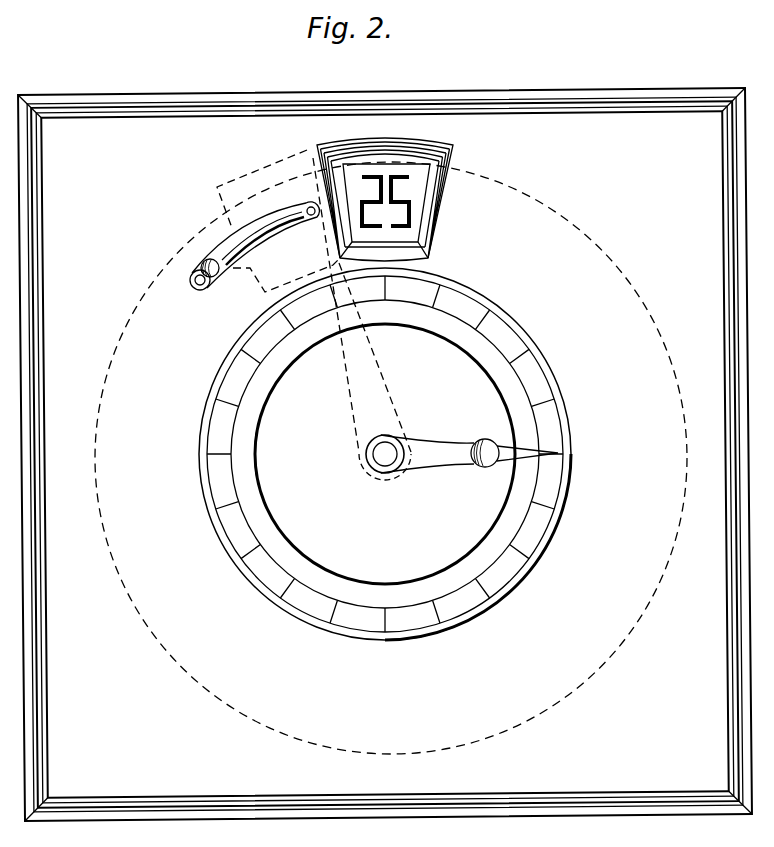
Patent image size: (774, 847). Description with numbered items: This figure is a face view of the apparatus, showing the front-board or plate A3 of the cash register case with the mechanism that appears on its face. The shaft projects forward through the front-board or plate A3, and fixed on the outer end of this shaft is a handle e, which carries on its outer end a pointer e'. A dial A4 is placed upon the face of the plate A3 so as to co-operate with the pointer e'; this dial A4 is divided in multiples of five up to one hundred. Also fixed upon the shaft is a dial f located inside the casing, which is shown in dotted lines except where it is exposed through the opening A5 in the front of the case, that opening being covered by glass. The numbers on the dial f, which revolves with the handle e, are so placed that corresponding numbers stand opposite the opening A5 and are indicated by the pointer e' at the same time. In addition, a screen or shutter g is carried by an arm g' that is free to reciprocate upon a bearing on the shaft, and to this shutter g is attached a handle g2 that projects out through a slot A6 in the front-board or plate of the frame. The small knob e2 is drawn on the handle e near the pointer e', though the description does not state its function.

The front-board or plate A3 is at (394, 458).
The dial A4 is at (398, 318).
The opening A5 is at (392, 204).
The slot A6 is at (249, 240).
The dial f is at (426, 164).
The screen or shutter g is at (254, 235).
The arm g' is at (362, 319).
The handle g2 is at (216, 275).
The handle e is at (420, 454).
The pointer e' is at (527, 447).
The knob on pointer e2 is at (487, 461).